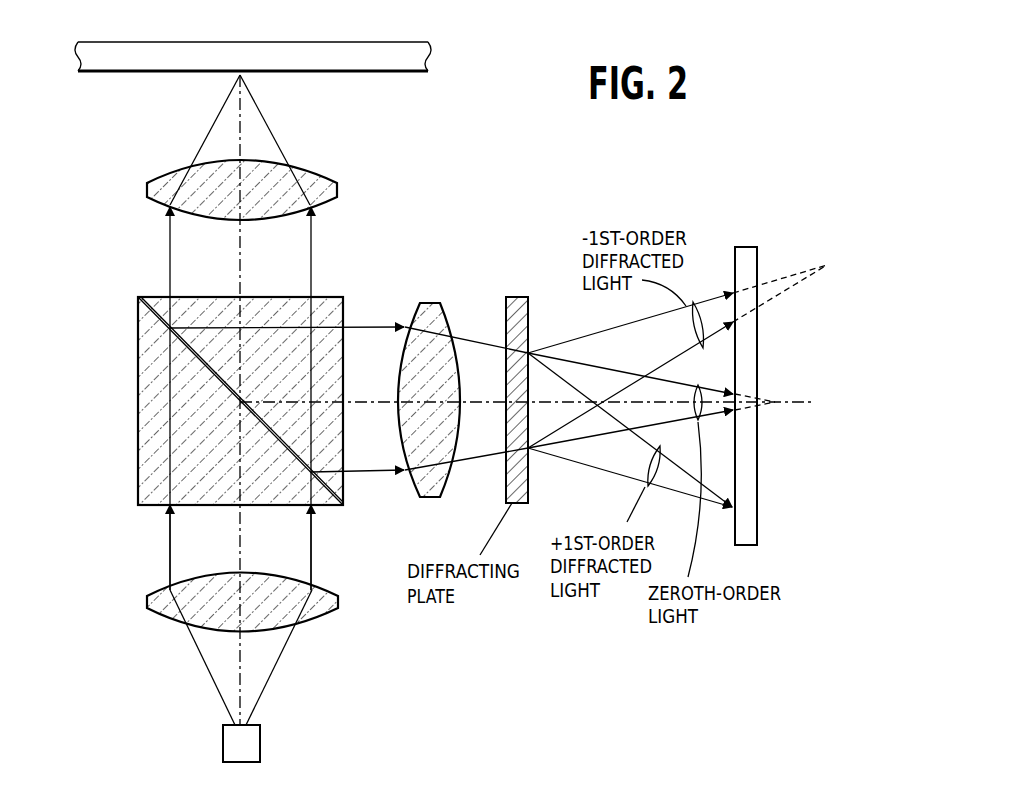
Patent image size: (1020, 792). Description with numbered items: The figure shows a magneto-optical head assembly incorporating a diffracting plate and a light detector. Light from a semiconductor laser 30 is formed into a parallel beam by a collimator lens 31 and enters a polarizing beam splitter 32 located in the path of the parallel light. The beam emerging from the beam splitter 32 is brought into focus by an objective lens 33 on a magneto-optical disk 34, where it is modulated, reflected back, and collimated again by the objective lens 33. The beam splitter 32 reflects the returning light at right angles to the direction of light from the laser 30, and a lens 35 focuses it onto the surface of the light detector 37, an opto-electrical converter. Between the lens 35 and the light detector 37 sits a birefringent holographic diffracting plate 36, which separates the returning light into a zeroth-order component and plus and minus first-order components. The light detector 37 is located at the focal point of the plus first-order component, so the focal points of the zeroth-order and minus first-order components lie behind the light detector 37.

The semiconductor laser 30 is at (250, 746).
The collimator lens 31 is at (327, 592).
The polarizing beam splitter 32 is at (341, 297).
The objective lens 33 is at (327, 174).
The magneto-optical disk 34 is at (418, 50).
The lens 35 is at (437, 310).
The birefringent holographic diffracting plate 36 is at (515, 297).
The light detector 37 is at (742, 247).